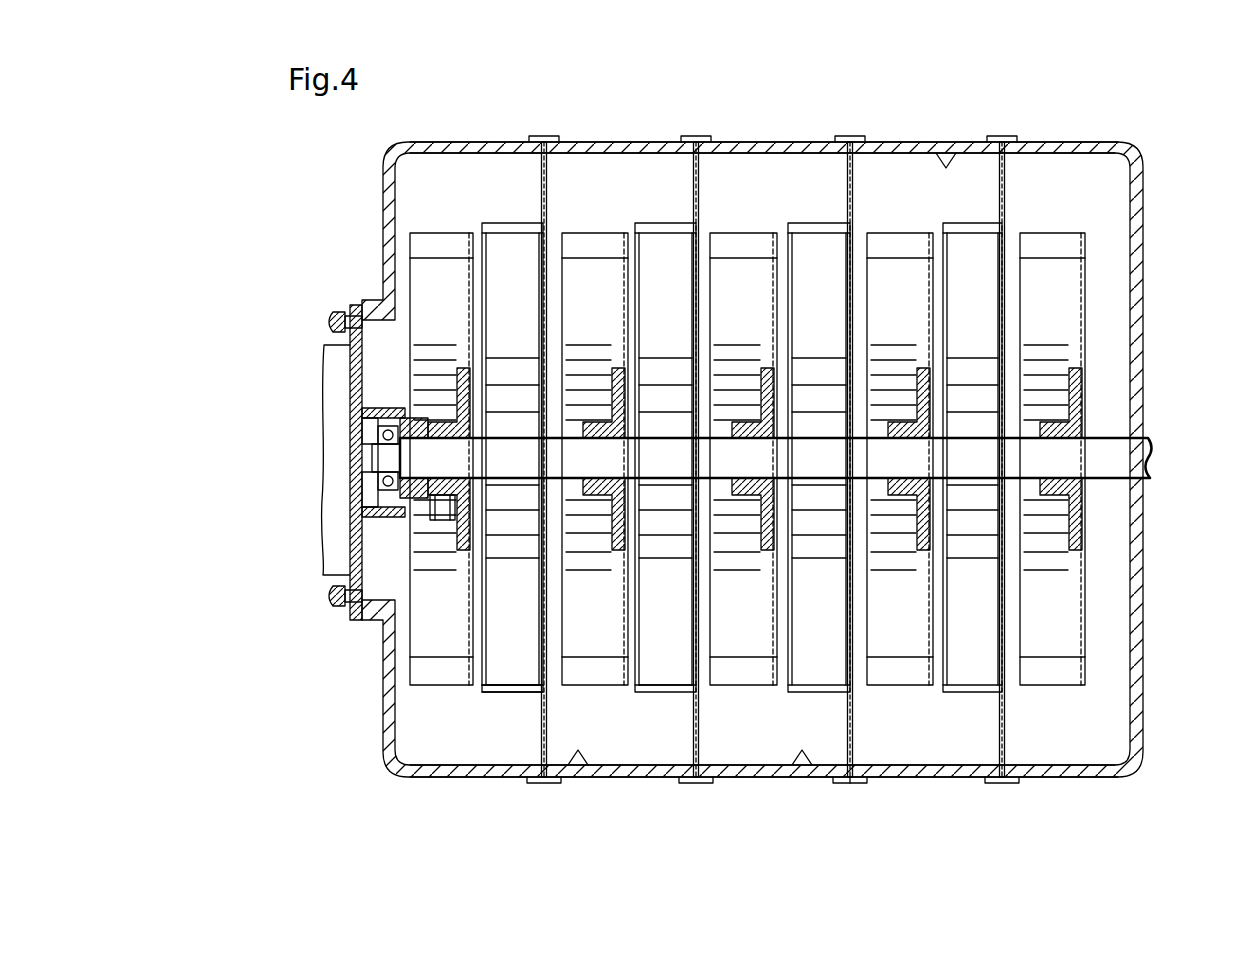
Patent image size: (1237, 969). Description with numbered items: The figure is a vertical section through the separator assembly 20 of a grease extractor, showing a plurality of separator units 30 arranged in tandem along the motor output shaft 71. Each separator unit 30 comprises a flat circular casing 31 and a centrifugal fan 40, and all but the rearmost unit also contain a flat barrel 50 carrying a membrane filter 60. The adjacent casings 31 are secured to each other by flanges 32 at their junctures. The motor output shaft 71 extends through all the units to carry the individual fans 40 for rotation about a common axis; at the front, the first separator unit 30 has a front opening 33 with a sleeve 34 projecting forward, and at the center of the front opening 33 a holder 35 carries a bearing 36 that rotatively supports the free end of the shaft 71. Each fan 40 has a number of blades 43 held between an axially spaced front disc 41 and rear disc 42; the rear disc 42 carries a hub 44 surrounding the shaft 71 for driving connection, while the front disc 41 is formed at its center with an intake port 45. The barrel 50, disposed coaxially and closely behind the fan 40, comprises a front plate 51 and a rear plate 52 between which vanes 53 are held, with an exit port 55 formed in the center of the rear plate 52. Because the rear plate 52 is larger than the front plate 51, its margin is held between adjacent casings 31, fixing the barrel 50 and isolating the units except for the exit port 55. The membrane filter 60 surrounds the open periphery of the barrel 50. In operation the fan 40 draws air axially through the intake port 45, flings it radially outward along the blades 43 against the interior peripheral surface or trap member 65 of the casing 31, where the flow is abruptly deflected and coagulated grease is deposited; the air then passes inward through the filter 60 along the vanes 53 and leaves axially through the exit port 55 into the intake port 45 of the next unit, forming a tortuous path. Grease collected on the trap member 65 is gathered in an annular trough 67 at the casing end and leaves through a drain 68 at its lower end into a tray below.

The separator assembly 20 is at (1138, 149).
The separator unit 30 is at (450, 141).
The flat circular casing 31 is at (410, 773).
The flange 32 is at (1002, 138).
The front opening 33 is at (355, 382).
The sleeve 34 is at (333, 327).
The holder 35 is at (372, 436).
The bearing 36 is at (380, 493).
The centrifugal fan 40 is at (408, 233).
The front disc 41 is at (557, 240).
The rear disc 42 is at (480, 660).
The blade 43 is at (595, 272).
The hub 44 is at (455, 518).
The intake port 45 is at (560, 358).
The flat barrel 50 is at (483, 220).
The front plate 51 is at (518, 668).
The rear plate 52 is at (853, 200).
The vane 53 is at (517, 673).
The exit port 55 is at (535, 532).
The membrane filter 60 is at (510, 222).
The trap member 65 is at (946, 158).
The annular trough 67 is at (850, 779).
The drain 68 is at (532, 782).
The motor output shaft 71 is at (1075, 448).